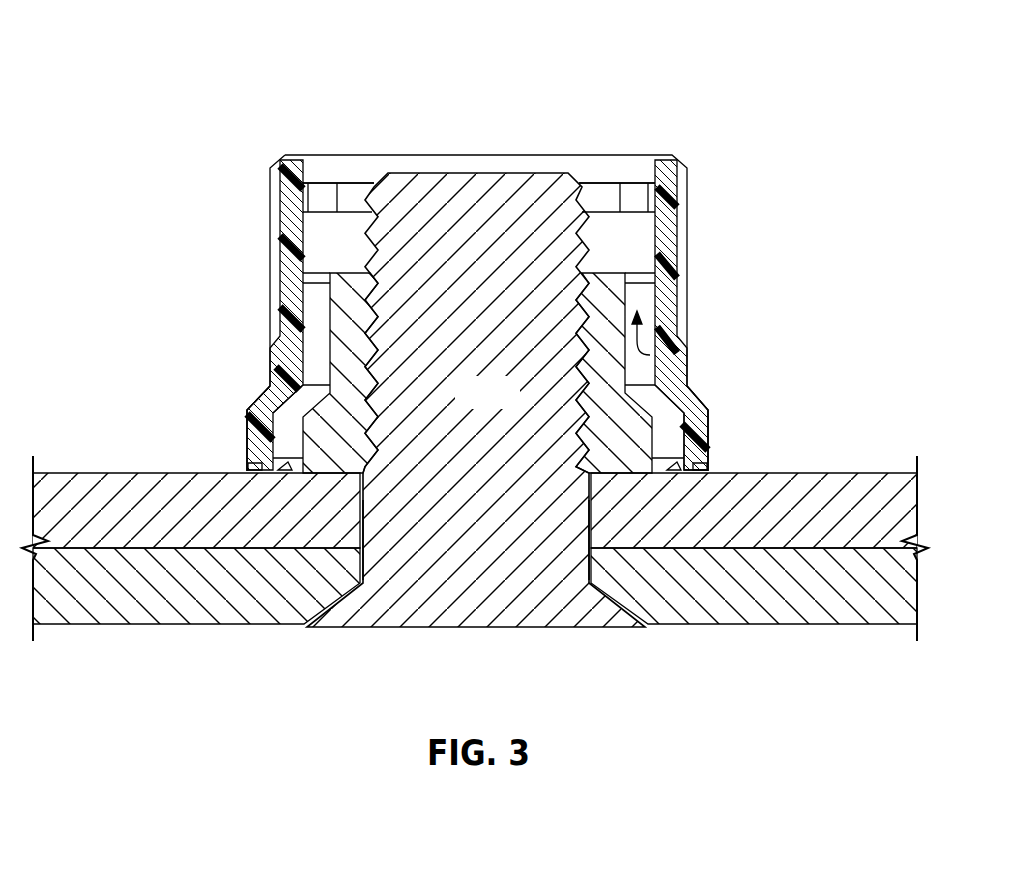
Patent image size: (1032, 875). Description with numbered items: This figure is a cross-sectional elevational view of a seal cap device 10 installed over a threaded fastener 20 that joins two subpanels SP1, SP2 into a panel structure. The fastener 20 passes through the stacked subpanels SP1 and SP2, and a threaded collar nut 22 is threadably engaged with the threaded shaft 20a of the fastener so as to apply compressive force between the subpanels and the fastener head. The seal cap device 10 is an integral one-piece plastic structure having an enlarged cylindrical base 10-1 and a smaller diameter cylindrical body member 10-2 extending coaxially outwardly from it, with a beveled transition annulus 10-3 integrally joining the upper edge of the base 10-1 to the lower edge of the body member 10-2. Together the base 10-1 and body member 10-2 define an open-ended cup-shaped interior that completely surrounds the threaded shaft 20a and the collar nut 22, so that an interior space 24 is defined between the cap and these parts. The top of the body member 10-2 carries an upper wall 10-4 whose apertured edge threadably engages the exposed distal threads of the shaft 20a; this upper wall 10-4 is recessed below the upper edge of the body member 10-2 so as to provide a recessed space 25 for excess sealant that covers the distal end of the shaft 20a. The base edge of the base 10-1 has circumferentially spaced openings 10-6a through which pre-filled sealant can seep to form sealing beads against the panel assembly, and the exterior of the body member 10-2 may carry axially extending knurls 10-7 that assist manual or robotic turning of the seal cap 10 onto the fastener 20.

The seal cap device 10 is at (760, 201).
The cylindrical base 10-1 is at (710, 430).
The cylindrical body member 10-2 is at (270, 265).
The beveled transition annulus 10-3 is at (263, 393).
The upper wall 10-4 is at (338, 195).
The openings 10-6a is at (245, 470).
The knurls 10-7 is at (268, 190).
The threaded fastener 20 is at (504, 159).
The threaded shaft 20a is at (508, 406).
The collar nut 22 is at (345, 357).
The interior space 24 is at (650, 355).
The recessed space 25 is at (366, 175).
The subpanel SP1 is at (778, 592).
The subpanel SP2 is at (865, 512).